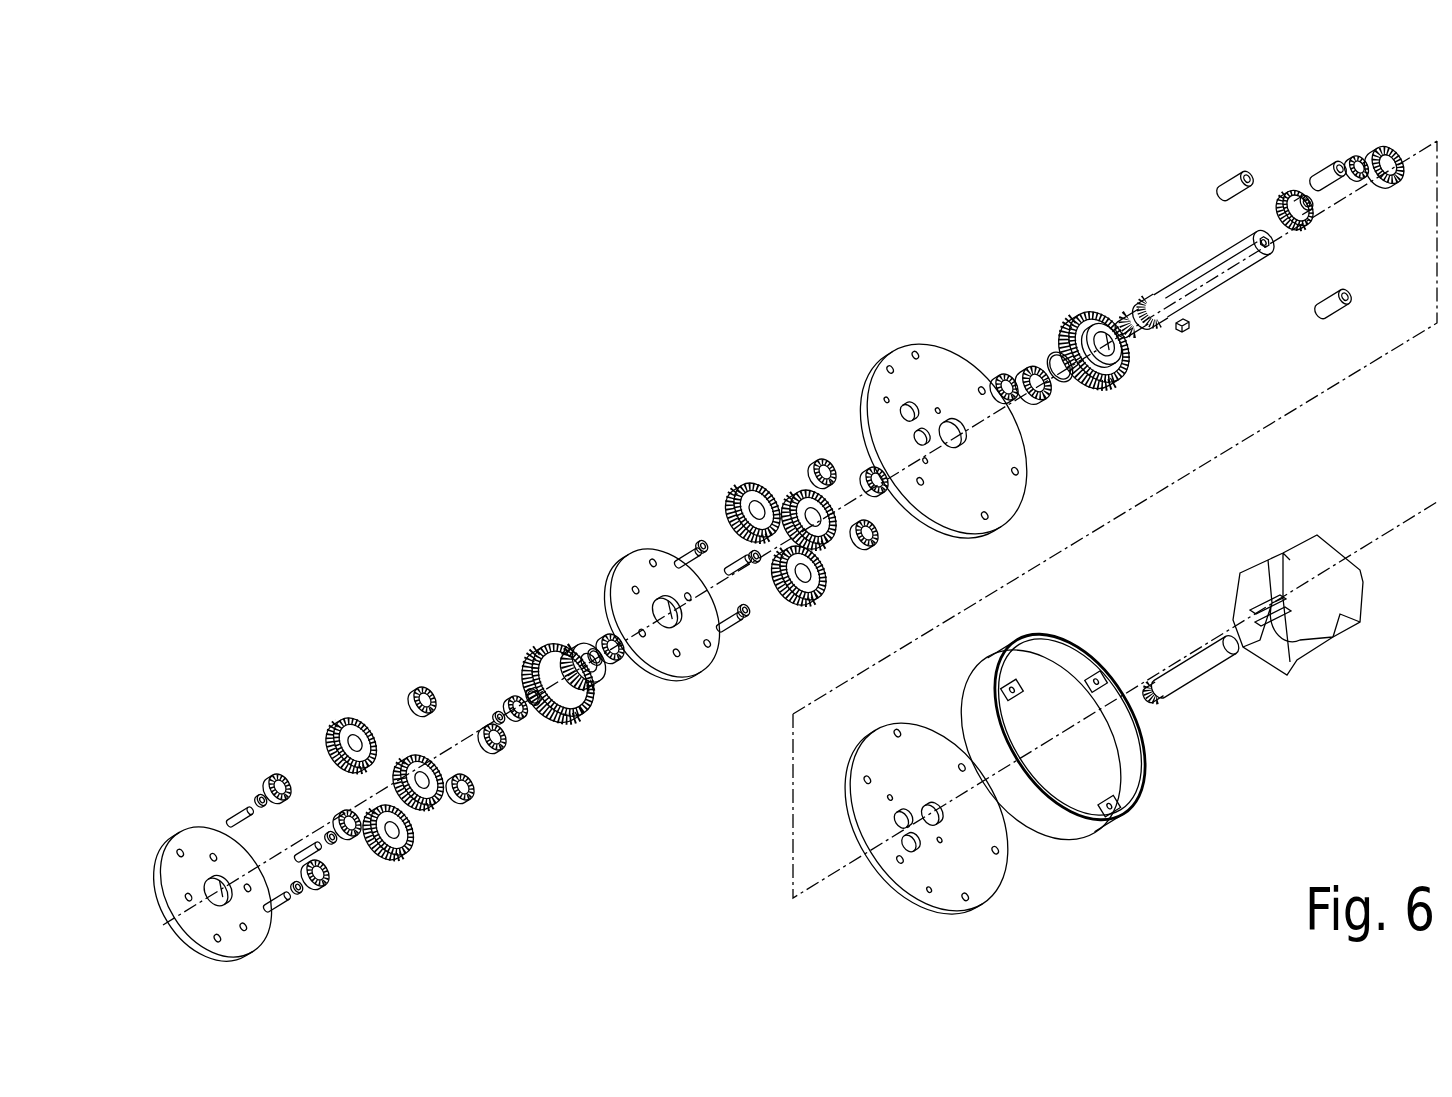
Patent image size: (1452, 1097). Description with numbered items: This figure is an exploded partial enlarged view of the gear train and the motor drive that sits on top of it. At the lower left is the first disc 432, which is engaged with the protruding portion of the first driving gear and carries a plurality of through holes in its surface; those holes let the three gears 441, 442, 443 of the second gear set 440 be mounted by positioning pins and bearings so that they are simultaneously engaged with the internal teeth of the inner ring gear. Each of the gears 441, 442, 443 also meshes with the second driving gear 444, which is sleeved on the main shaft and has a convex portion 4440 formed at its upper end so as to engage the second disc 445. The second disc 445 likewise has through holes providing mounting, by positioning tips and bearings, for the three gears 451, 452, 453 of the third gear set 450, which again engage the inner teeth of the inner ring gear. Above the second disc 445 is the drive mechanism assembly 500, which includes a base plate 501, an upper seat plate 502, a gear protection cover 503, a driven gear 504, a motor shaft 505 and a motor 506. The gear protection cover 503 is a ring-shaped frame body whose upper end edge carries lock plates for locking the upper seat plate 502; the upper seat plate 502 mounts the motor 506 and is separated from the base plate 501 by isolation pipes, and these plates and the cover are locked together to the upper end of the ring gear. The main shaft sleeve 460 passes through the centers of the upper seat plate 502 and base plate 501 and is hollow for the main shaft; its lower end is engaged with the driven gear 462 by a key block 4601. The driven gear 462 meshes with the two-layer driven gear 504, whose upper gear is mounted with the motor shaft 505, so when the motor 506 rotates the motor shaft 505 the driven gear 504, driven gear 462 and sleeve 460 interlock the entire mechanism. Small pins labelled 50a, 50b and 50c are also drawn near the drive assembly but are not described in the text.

The first disc 432 is at (162, 862).
The second gear set 440 is at (365, 698).
The gear 441 is at (342, 732).
The gear 442 is at (403, 856).
The gear 443 is at (440, 802).
The second driving gear 444 is at (540, 657).
The convex portion 4440 is at (573, 652).
The second disc 445 is at (625, 580).
The third gear set 450 is at (771, 437).
The gear 451 is at (733, 492).
The gear 452 is at (820, 599).
The gear 453 is at (840, 547).
The main shaft sleeve 460 is at (1193, 273).
The key block 4601 is at (1192, 332).
The driven gear 462 is at (1063, 320).
The drive mechanism assembly 500 is at (1281, 112).
The base plate 501 is at (900, 357).
The upper seat plate 502 is at (993, 870).
The gear protection cover 503 is at (1137, 762).
The driven gear 504 is at (1292, 190).
The motor shaft 505 is at (1196, 670).
The motor 506 is at (1355, 593).
The pin 50a is at (1230, 177).
The pin 50b is at (1348, 310).
The pin 50c is at (1325, 165).